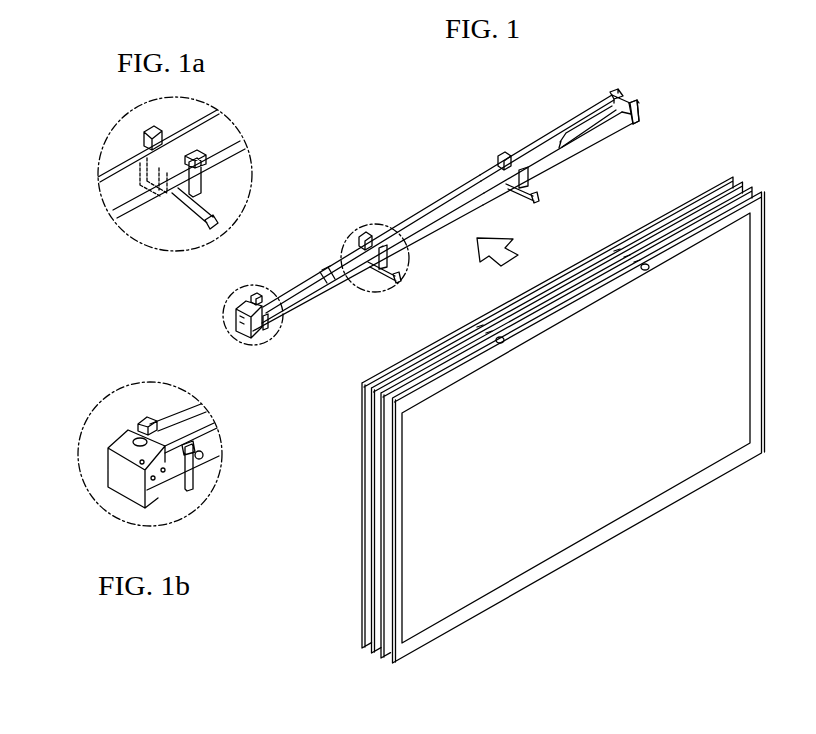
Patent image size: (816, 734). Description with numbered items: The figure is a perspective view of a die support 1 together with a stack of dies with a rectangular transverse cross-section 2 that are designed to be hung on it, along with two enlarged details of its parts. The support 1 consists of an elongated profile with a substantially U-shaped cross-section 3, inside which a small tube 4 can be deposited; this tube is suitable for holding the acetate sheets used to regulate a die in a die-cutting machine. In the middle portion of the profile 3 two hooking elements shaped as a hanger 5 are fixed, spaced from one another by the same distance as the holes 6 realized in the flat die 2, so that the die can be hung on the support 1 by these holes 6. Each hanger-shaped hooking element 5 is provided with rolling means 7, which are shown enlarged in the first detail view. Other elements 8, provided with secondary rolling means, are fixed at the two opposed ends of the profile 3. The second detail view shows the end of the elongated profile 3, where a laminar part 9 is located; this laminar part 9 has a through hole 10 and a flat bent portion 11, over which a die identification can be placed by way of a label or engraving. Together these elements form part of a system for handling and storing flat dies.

In FIG. 1, the support 1 is at (448, 217).
In FIG. 1, the dies with rectangular transverse cross-section 2 is at (563, 420).
In FIG. 1, the elongated profile with a substantially U-shaped cross-section 3 is at (322, 297).
In FIG. 1, the small tube 4 is at (458, 190).
In FIG. 1, the hooking element shaped as a hanger 5 is at (449, 217).
In FIG. 1A, the hooking element shaped as a hanger 5 is at (176, 218).
In FIG. 1, the holes 6 is at (648, 269).
In FIG. 1, the rolling means 7 is at (259, 311).
In FIG. 1A, the rolling means 7 is at (208, 162).
In FIG. 1B, the rolling means 7 is at (134, 421).
In FIG. 1, the elements provided with secondary rolling means 8 is at (636, 124).
In FIG. 1B, the elements provided with secondary rolling means 8 is at (194, 488).
In FIG. 1, the laminar part 9 is at (249, 319).
In FIG. 1B, the laminar part 9 is at (117, 470).
In FIG. 1B, the through hole 10 is at (130, 439).
In FIG. 1B, the flat bent portion 11 is at (117, 494).